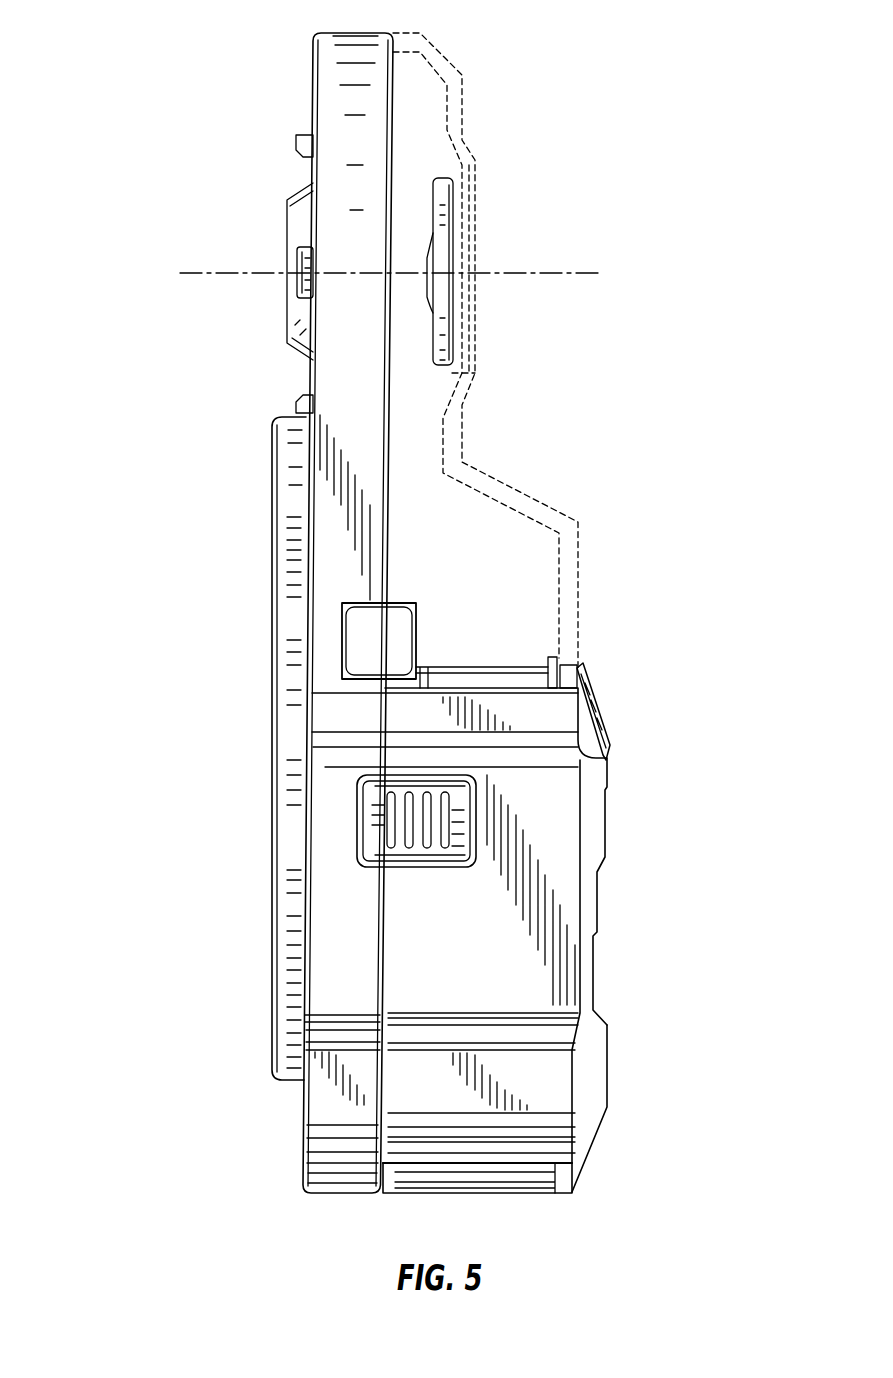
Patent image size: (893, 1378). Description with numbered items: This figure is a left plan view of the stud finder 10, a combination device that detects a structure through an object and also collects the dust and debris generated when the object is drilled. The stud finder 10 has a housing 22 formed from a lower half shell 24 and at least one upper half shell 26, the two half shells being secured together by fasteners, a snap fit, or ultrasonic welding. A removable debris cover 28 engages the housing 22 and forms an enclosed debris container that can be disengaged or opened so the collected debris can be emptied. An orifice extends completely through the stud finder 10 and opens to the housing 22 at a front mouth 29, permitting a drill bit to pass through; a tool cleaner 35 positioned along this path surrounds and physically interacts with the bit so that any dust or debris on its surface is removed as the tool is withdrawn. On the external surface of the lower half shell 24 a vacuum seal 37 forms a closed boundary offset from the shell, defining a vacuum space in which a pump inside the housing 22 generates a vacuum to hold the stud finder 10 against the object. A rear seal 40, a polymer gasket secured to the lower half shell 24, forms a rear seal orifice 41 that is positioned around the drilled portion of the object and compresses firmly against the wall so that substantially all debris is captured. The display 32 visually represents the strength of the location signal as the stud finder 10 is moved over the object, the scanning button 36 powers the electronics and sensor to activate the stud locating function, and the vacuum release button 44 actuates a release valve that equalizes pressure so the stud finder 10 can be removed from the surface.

The stud finder 10 is at (160, 180).
The housing 22 is at (598, 918).
The lower half shell 24 is at (305, 1113).
The upper half shell 26 is at (608, 1084).
The debris cover 28 is at (586, 548).
The front mouth 29 is at (480, 373).
The display 32 is at (600, 718).
The tool cleaner 35 is at (445, 178).
The scanning button 36 is at (350, 638).
The vacuum seal 37 is at (280, 910).
The rear seal 40 is at (287, 200).
The rear seal orifice 41 is at (287, 303).
The vacuum release button 44 is at (462, 820).